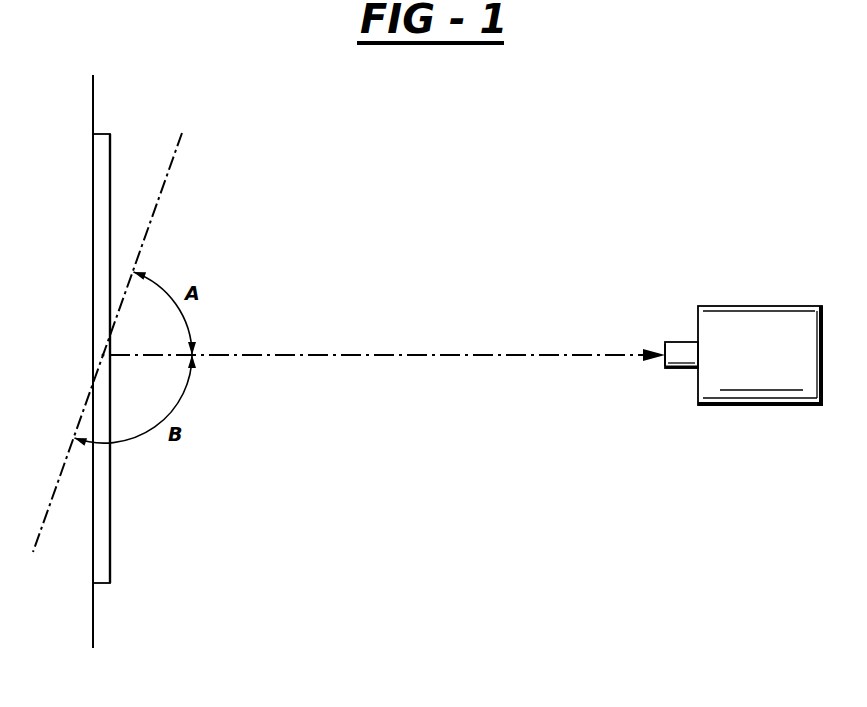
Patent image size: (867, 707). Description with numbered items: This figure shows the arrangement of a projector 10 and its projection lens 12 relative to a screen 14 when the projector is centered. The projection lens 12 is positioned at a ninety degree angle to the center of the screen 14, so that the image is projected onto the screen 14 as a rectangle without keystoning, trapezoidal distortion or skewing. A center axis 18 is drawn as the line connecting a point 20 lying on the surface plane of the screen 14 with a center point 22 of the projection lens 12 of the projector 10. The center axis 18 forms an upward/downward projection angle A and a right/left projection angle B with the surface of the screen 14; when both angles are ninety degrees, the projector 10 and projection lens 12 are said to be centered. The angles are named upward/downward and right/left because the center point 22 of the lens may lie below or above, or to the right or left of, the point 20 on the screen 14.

The projector 10 is at (765, 306).
The projection lens 12 is at (676, 368).
The screen 14 is at (105, 134).
The center axis 18 is at (437, 354).
The point 20 is at (103, 355).
The center point 22 is at (662, 357).